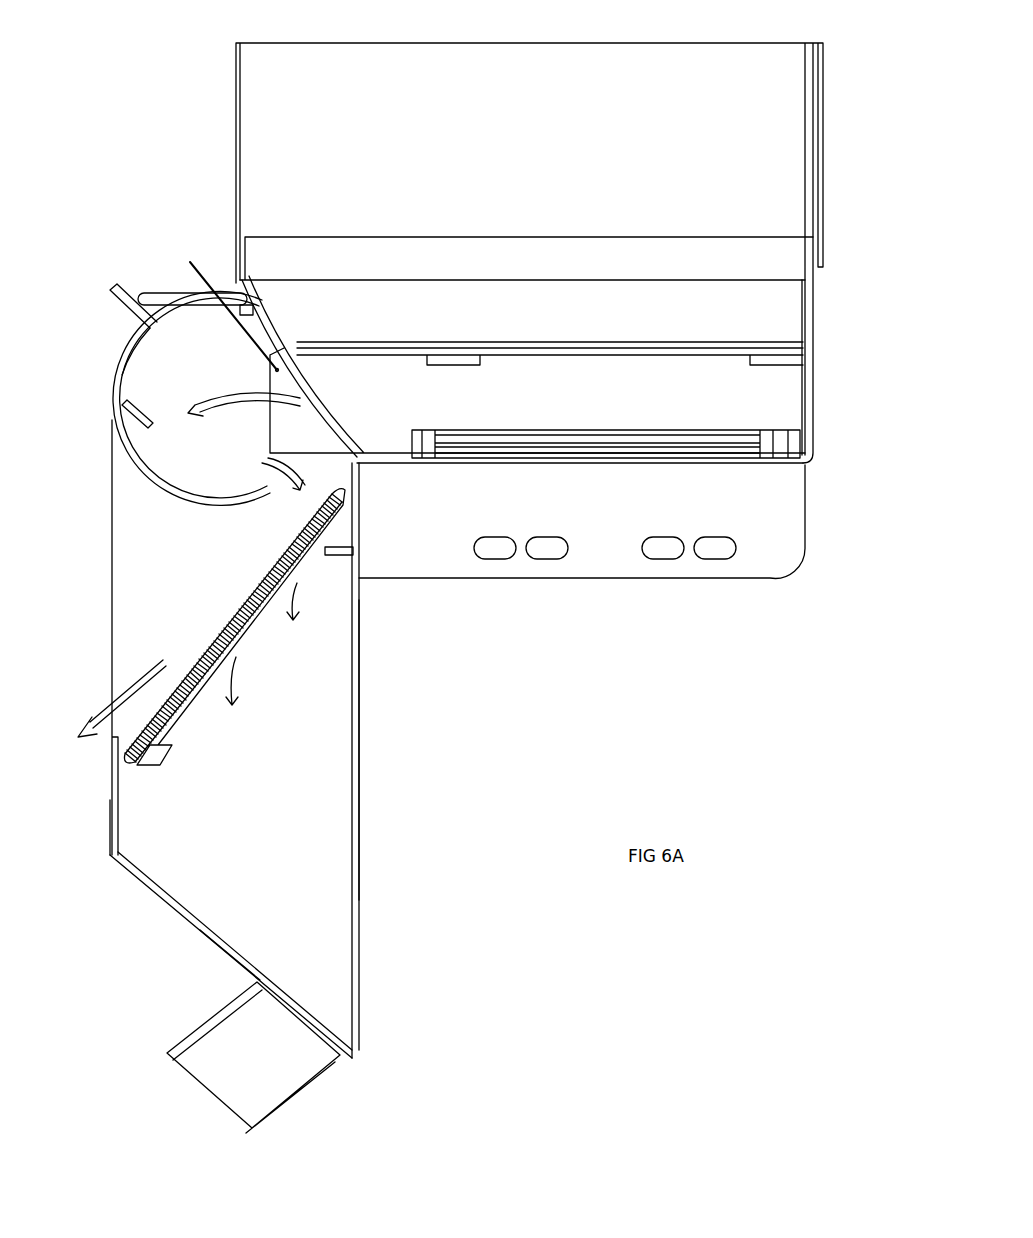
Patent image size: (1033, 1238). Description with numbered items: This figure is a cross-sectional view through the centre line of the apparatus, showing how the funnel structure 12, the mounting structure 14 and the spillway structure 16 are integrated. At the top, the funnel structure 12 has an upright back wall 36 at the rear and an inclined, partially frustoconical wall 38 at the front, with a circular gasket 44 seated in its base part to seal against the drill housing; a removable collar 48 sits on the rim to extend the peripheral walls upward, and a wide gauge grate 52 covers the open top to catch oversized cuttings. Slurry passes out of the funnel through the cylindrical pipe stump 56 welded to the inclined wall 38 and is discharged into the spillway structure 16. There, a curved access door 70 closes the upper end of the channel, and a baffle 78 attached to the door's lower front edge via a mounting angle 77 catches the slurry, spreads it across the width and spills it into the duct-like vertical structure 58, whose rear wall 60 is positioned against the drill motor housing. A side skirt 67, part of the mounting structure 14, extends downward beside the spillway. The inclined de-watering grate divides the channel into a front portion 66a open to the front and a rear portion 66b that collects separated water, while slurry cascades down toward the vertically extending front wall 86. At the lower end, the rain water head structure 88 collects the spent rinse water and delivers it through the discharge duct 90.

The funnel structure 12 is at (190, 110).
The removable collar 48 is at (233, 155).
The upright back wall 36 is at (808, 312).
The grate 52 is at (363, 348).
The circular gasket 44 is at (440, 435).
The inclined wall 38 is at (277, 322).
The pipe stump 56 is at (228, 301).
The access door 70 is at (137, 365).
The mounting angle 77 is at (125, 412).
The baffle 78 is at (172, 468).
The front portion of channel 66a is at (200, 583).
The rear portion of channel 66b is at (300, 748).
The duct-like vertical structure 58 is at (390, 671).
The spillway structure 16 is at (445, 758).
The rear wall 60 is at (362, 782).
The mounting structure 14 is at (620, 594).
The side skirt 67 is at (605, 527).
The front wall 86 is at (115, 812).
The rain water head structure 88 is at (228, 923).
The discharge duct 90 is at (303, 1082).